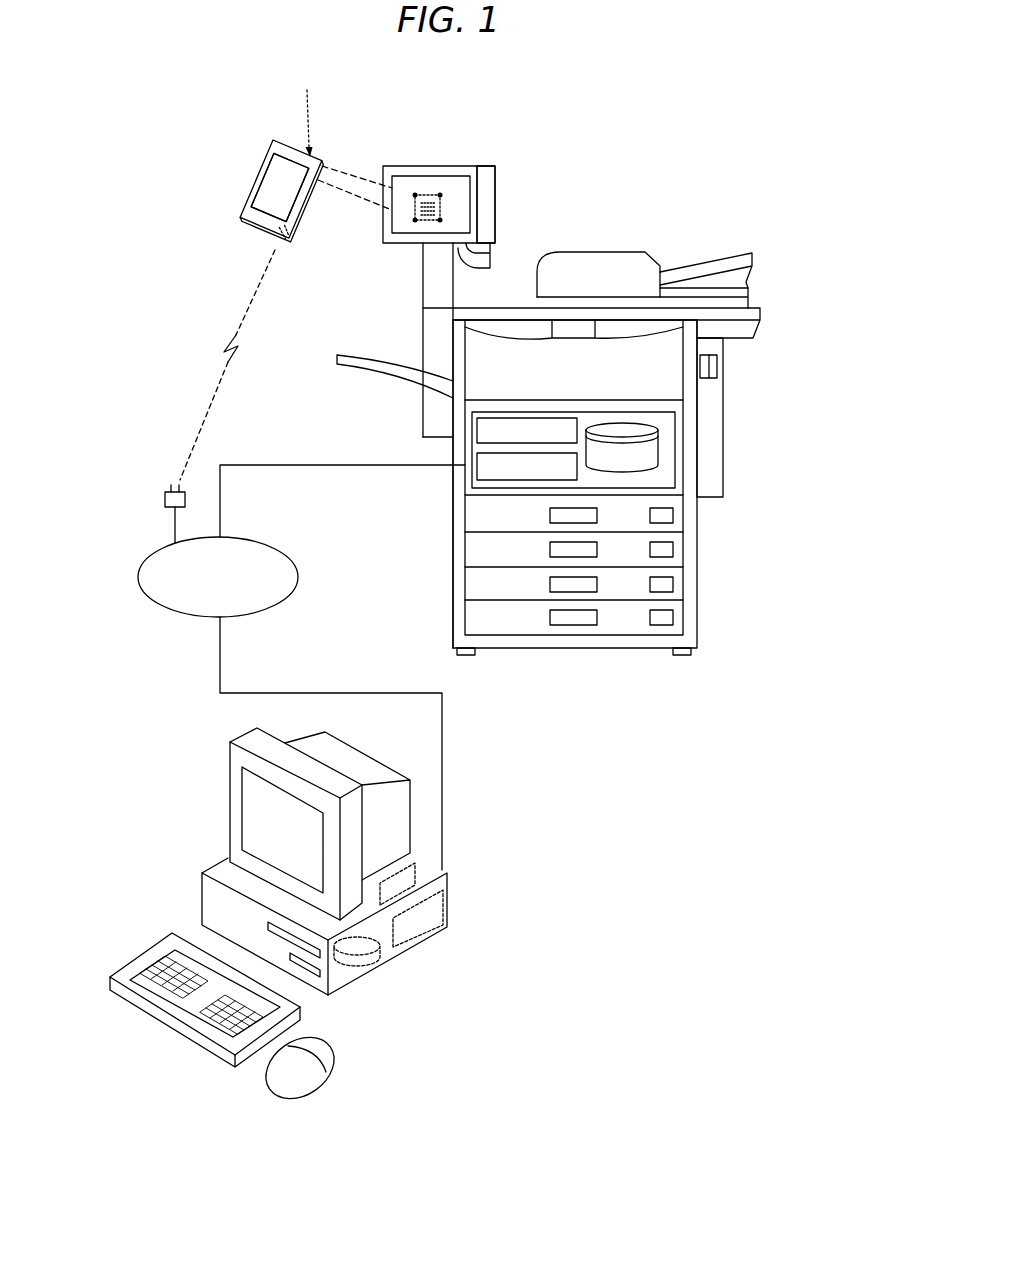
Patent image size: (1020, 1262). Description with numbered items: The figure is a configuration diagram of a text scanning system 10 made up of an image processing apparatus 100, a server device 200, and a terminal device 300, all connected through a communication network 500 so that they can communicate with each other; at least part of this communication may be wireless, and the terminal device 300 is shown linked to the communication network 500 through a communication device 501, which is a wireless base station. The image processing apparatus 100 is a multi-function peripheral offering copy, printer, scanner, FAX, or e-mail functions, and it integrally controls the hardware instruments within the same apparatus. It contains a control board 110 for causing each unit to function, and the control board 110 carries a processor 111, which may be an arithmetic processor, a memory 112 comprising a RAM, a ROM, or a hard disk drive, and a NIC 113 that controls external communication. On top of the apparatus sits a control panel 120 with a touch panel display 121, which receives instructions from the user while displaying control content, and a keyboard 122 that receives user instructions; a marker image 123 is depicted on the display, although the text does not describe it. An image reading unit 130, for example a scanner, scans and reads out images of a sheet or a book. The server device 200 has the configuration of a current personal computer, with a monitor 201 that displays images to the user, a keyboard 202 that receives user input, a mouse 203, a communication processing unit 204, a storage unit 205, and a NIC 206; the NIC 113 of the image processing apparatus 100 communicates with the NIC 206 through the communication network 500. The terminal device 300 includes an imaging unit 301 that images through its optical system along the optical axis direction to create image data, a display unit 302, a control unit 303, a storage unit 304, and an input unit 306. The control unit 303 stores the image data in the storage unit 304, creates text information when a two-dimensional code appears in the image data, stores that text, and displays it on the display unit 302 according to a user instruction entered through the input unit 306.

The text scanning system 10 is at (430, 91).
The image processing apparatus 100 is at (608, 234).
The control board 110 is at (680, 472).
The processor 111 is at (474, 425).
The memory 112 is at (658, 450).
The Network Interface Card (NIC) 113 is at (472, 478).
The control panel 120 is at (470, 167).
The touch panel display 121 is at (398, 174).
The keyboard 122 is at (490, 200).
The marker image 123 is at (418, 192).
The image reading unit 130 is at (773, 250).
The server device 200 is at (167, 821).
The monitor 201 is at (229, 776).
The keyboard 202 is at (148, 944).
The mouse 203 is at (333, 1066).
The communication processing unit 204 is at (429, 934).
The storage unit 205 is at (374, 973).
The NIC 206 is at (414, 873).
The terminal device 300 is at (285, 144).
The imaging unit 301 is at (309, 109).
The display unit 302 is at (262, 180).
The control unit 303 is at (300, 234).
The storage unit 304 is at (282, 232).
The input unit 306 is at (280, 187).
The communication network 500 is at (281, 552).
The communication device 501 is at (164, 500).